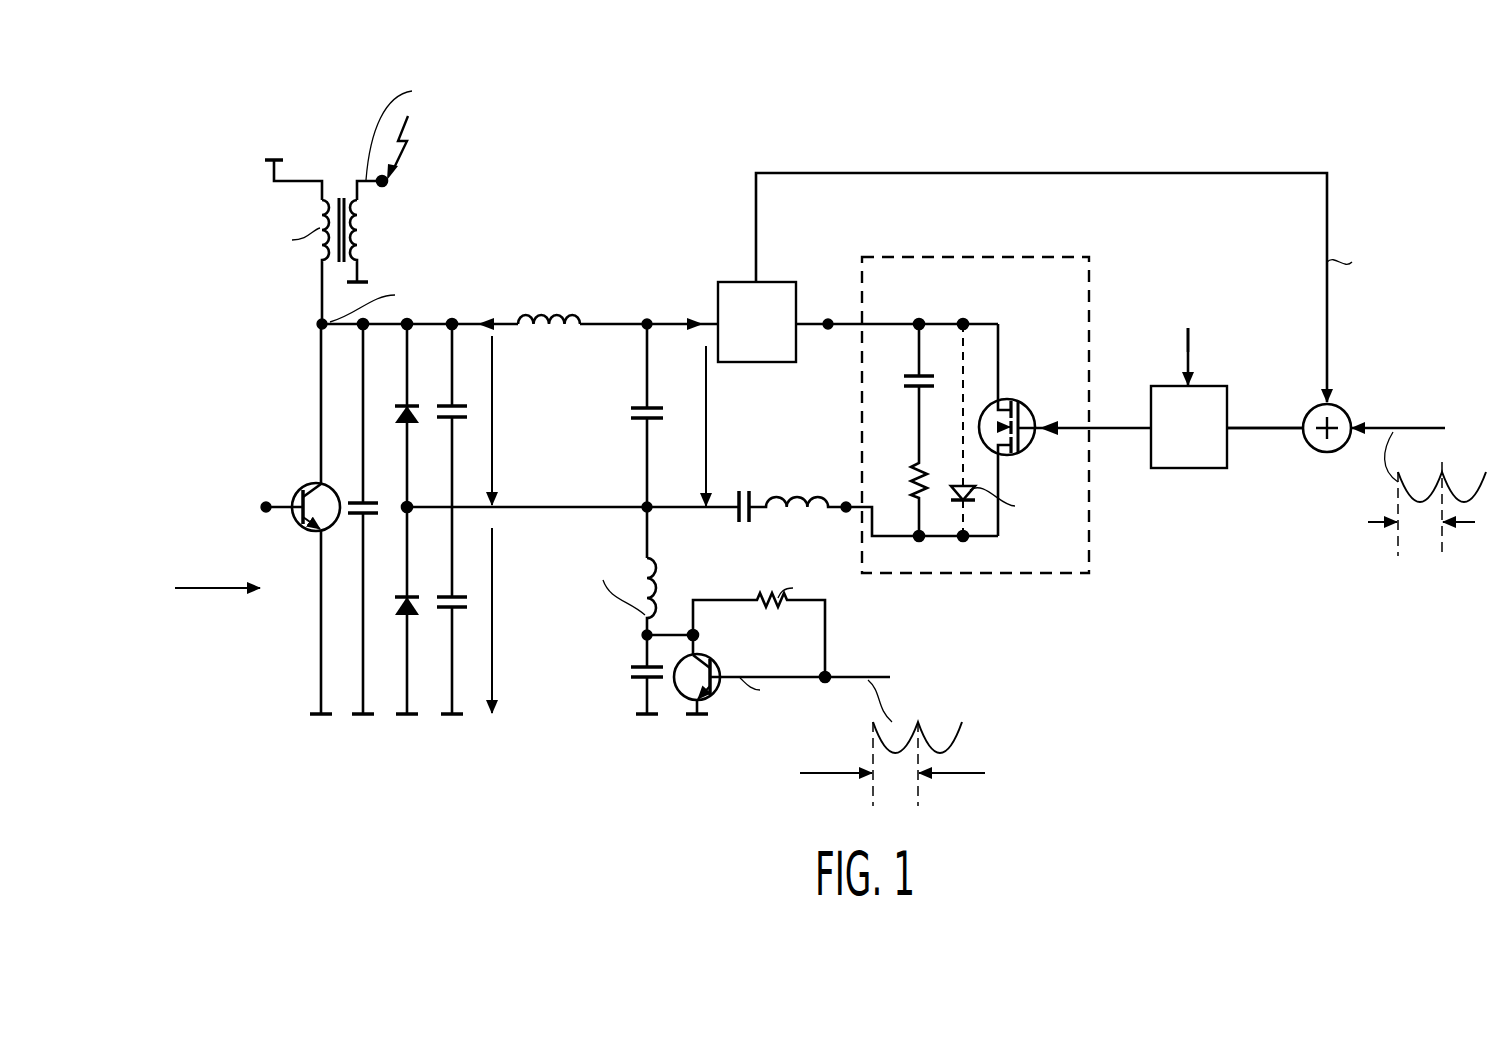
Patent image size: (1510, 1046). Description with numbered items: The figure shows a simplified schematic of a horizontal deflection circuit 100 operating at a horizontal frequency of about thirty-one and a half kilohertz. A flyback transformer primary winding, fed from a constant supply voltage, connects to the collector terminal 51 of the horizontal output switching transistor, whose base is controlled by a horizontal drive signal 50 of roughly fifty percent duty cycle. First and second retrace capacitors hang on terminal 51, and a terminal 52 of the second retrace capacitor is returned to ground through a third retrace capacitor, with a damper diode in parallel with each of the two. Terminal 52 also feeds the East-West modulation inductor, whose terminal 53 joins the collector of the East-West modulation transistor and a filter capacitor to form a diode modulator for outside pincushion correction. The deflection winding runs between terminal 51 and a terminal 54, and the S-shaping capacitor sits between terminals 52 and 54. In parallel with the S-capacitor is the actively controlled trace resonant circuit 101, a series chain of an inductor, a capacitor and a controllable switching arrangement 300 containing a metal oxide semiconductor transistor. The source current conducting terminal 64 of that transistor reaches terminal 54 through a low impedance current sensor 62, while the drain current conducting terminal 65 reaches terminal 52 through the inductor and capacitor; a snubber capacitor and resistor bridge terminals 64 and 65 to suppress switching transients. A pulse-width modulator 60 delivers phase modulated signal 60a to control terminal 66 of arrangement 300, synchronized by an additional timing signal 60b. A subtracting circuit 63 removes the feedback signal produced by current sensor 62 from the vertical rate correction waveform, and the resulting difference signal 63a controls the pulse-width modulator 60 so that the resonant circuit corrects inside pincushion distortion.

The horizontal drive signal 50 is at (283, 503).
The collector terminal 51 is at (320, 325).
The terminal 52 is at (645, 504).
The terminal 53 is at (645, 635).
The terminal 54 is at (647, 320).
The pulse-width modulator 60 is at (1188, 470).
The phase modulated signal 60a is at (1108, 431).
The additional timing signal 60b is at (1190, 352).
The current sensor 62 is at (735, 282).
The circuit 63 is at (1340, 405).
The difference signal 63a is at (1278, 425).
The source current conducting terminal 64 is at (828, 320).
The drain current conducting terminal 65 is at (845, 510).
The control terminal 66 is at (1130, 427).
The deflection circuit 100 is at (575, 779).
The actively controlled trace resonant circuit 101 is at (752, 311).
The controllable switching arrangement 300 is at (968, 258).